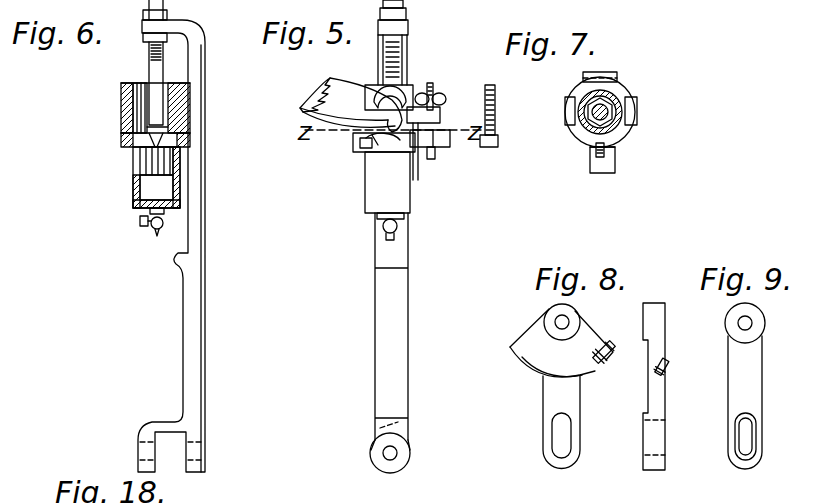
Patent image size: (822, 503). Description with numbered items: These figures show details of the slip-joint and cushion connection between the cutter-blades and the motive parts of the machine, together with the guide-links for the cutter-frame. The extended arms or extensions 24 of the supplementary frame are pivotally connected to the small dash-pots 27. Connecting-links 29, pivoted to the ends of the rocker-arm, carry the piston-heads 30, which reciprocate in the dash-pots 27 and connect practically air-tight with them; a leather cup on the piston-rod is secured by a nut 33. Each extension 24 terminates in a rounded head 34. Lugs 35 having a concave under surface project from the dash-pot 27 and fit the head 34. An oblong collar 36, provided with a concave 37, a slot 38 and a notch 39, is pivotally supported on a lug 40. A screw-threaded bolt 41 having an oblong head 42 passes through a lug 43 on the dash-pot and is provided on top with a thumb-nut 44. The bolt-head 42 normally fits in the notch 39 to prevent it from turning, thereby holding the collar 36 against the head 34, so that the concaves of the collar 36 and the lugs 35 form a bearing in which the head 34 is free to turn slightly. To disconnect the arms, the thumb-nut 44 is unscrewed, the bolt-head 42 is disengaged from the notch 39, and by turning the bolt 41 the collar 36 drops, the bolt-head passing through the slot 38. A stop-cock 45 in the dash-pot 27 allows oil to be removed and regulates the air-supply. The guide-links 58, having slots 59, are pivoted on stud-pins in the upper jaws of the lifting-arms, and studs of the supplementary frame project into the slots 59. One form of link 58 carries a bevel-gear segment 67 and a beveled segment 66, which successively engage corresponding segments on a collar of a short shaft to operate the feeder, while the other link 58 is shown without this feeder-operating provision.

In FIG. 5, the extensions 24 is at (332, 88).
In FIG. 6, the dash-pot 27 is at (135, 190).
In FIG. 5, the dash-pot 27 is at (406, 194).
In FIG. 6, the connecting-link 29 is at (200, 303).
In FIG. 5, the connecting-link 29 is at (397, 309).
In FIG. 6, the piston-head 30 is at (145, 157).
In FIG. 6, the nut 33 is at (166, 120).
In FIG. 5, the nut 33 is at (393, 42).
In FIG. 6, the rounded head 34 is at (122, 115).
In FIG. 5, the rounded head 34 is at (390, 118).
In FIG. 6, the lug 35 is at (121, 86).
In FIG. 5, the lug 35 is at (396, 93).
In FIG. 7, the oblong collar 36 is at (626, 126).
In FIG. 6, the concave 37 is at (125, 140).
In FIG. 5, the concave 37 is at (396, 142).
In FIG. 7, the slot 38 is at (615, 166).
In FIG. 5, the notch 39 is at (419, 148).
In FIG. 5, the lug 40 is at (366, 150).
In FIG. 7, the lug 40 is at (616, 77).
In FIG. 5, the screw-threaded bolt 41 is at (495, 117).
In FIG. 7, the screw-threaded bolt 41 is at (598, 156).
In FIG. 5, the oblong head 42 is at (436, 149).
In FIG. 5, the lug 43 is at (426, 113).
In FIG. 5, the thumb-nut 44 is at (437, 95).
In FIG. 6, the stop-cock 45 is at (153, 228).
In FIG. 8, the link 58 is at (549, 402).
In FIG. 9, the link 58 is at (749, 376).
In FIG. 8, the slot 59 is at (559, 440).
In FIG. 9, the slot 59 is at (741, 446).
In FIG. 8, the beveled segment 66 is at (534, 362).
In FIG. 8, the bevel-gear segment 67 is at (594, 352).